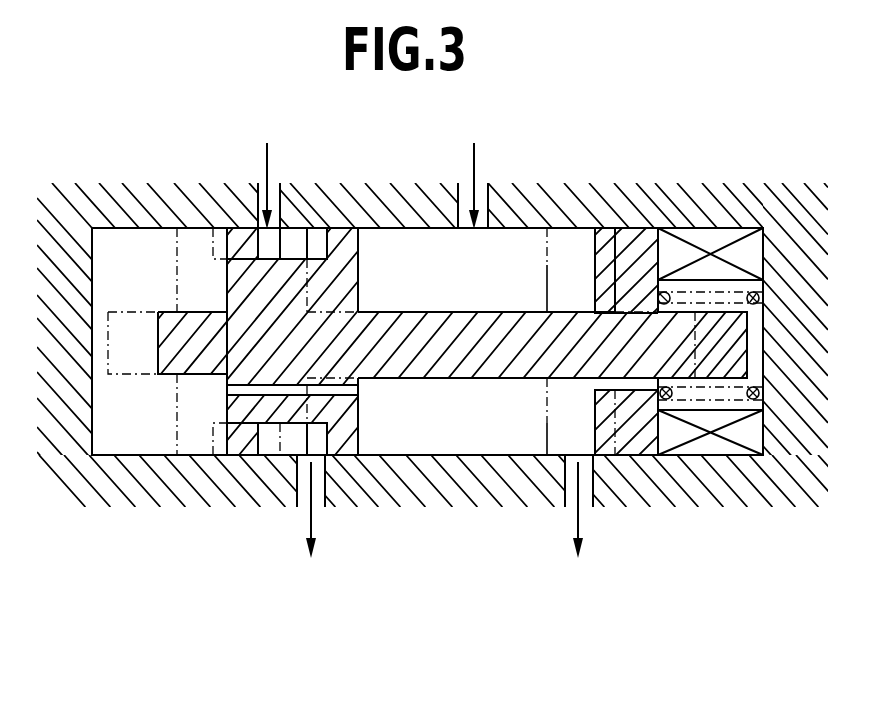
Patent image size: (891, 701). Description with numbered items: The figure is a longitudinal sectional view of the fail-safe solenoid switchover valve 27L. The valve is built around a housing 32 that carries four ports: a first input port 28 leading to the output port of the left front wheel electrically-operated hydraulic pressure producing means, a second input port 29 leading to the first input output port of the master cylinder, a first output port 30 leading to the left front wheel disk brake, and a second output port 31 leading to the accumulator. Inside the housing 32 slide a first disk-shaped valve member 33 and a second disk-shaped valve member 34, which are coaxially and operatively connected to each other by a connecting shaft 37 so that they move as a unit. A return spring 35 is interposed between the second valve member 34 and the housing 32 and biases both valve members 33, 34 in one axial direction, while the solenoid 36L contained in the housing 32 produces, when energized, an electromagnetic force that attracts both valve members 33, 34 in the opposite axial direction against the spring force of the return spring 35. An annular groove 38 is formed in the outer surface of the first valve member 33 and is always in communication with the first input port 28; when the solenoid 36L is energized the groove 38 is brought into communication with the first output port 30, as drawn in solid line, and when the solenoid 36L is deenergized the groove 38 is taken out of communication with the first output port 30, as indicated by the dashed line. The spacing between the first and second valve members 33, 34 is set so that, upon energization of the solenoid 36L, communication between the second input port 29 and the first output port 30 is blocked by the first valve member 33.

The fail-safe solenoid switchover valve 27L is at (433, 516).
The first input port 28 is at (256, 205).
The second input port 29 is at (461, 215).
The first output port 30 is at (297, 493).
The second output port 31 is at (565, 483).
The housing 32 is at (685, 202).
The first disk-shaped valve member 33 is at (233, 407).
The second disk-shaped valve member 34 is at (603, 282).
The return spring 35 is at (760, 300).
The solenoid 36L is at (725, 243).
The connecting shaft 37 is at (440, 327).
The annular groove 38 is at (317, 252).